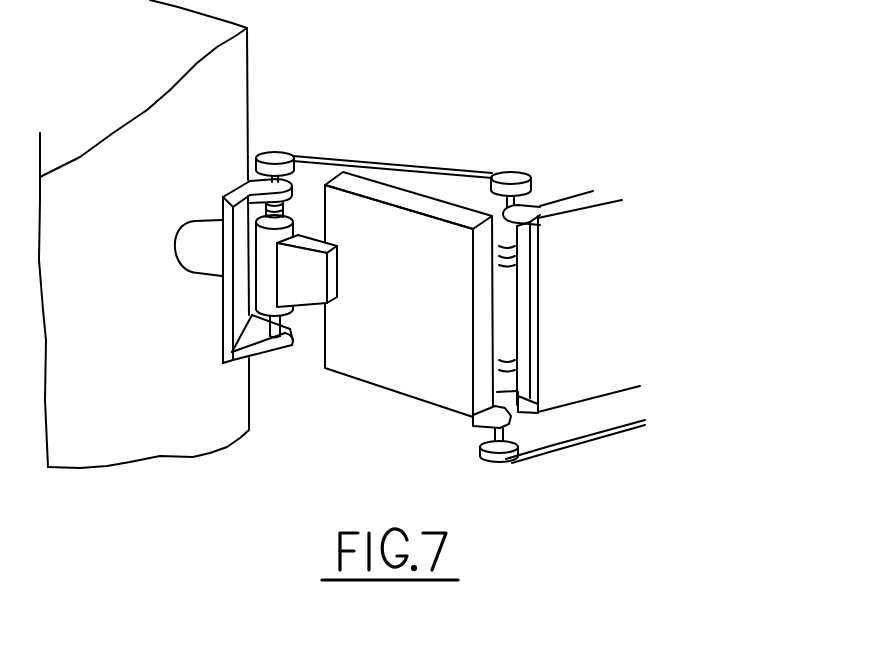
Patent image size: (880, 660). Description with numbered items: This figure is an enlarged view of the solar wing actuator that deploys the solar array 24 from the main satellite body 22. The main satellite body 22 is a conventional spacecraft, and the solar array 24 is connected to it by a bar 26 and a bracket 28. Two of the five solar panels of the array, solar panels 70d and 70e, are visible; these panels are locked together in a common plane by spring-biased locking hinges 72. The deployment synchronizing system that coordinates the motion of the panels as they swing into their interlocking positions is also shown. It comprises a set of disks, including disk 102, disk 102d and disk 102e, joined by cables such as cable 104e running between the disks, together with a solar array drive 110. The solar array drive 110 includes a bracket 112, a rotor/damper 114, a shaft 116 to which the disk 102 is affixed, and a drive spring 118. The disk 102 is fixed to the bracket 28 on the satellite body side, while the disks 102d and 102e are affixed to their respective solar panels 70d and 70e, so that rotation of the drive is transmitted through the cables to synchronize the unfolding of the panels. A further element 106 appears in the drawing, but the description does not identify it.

The main satellite body 22 is at (135, 211).
The solar array 24 is at (410, 383).
The bar 26 is at (197, 260).
The bracket 28 is at (272, 360).
The solar panel 70d is at (640, 328).
The solar panel 70e is at (410, 299).
The spring-biased locking hinge 72 is at (517, 253).
The disk 102 is at (272, 153).
The disk 102d is at (517, 183).
The disk 102e is at (481, 444).
The cable 104e is at (443, 167).
The clamp bracket 106 is at (221, 203).
The solar array drive 110 is at (267, 297).
The bracket 112 is at (308, 290).
The rotor/damper 114 is at (267, 258).
The shaft 116 is at (296, 205).
The drive spring 118 is at (242, 177).